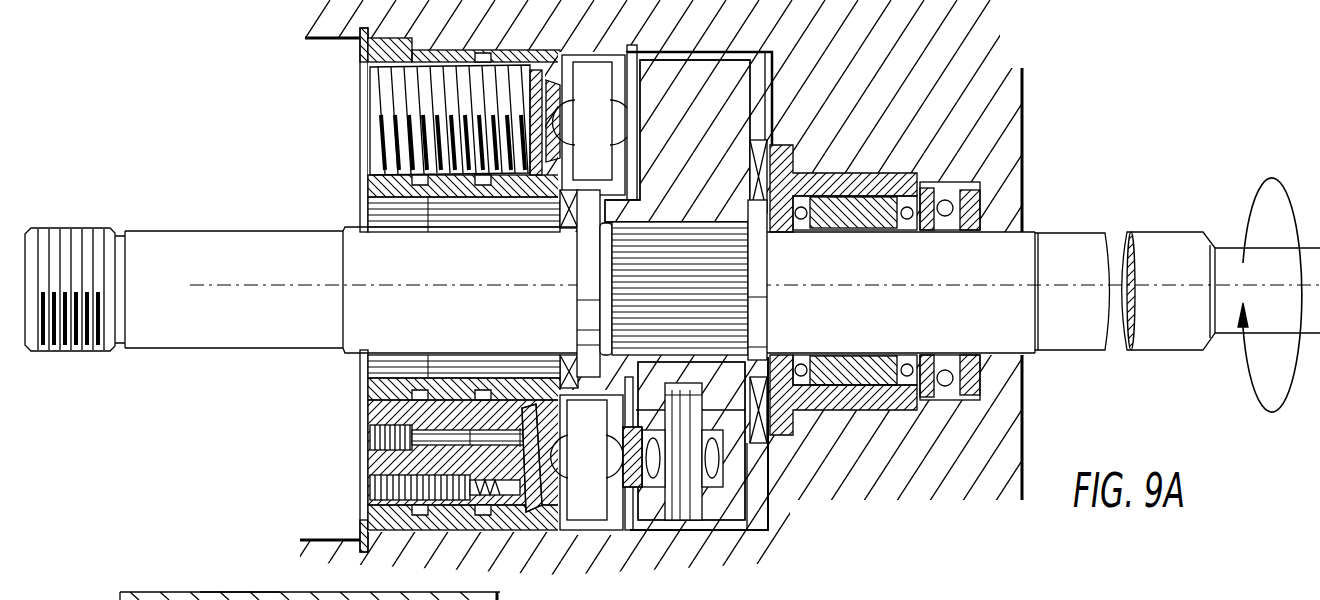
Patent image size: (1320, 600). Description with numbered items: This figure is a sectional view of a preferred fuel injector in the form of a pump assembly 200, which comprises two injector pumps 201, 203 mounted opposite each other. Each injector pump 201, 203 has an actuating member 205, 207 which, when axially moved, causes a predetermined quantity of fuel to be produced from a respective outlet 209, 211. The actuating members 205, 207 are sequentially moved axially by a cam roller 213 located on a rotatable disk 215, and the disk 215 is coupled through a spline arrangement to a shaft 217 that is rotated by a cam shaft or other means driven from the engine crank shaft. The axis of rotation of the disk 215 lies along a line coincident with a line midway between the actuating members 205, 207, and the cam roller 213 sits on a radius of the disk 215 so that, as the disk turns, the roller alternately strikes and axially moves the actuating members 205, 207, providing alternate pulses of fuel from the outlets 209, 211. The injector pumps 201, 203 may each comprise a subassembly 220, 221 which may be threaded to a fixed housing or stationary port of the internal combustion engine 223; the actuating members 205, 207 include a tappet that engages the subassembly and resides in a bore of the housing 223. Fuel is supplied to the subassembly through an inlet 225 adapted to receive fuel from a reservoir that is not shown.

The pump assembly 200 is at (668, 568).
The injector pump 201 is at (423, 149).
The injector pump 203 is at (412, 455).
The actuating member 205 is at (585, 508).
The actuating member 207 is at (590, 65).
The outlet 209 is at (483, 522).
The outlet 211 is at (477, 200).
The cam roller 213 is at (694, 520).
The rotatable disk 215 is at (716, 456).
The shaft 217 is at (791, 415).
The subassembly 220 is at (375, 385).
The subassembly 221 is at (380, 77).
The housing 223 is at (314, 592).
The inlet 225 is at (244, 592).